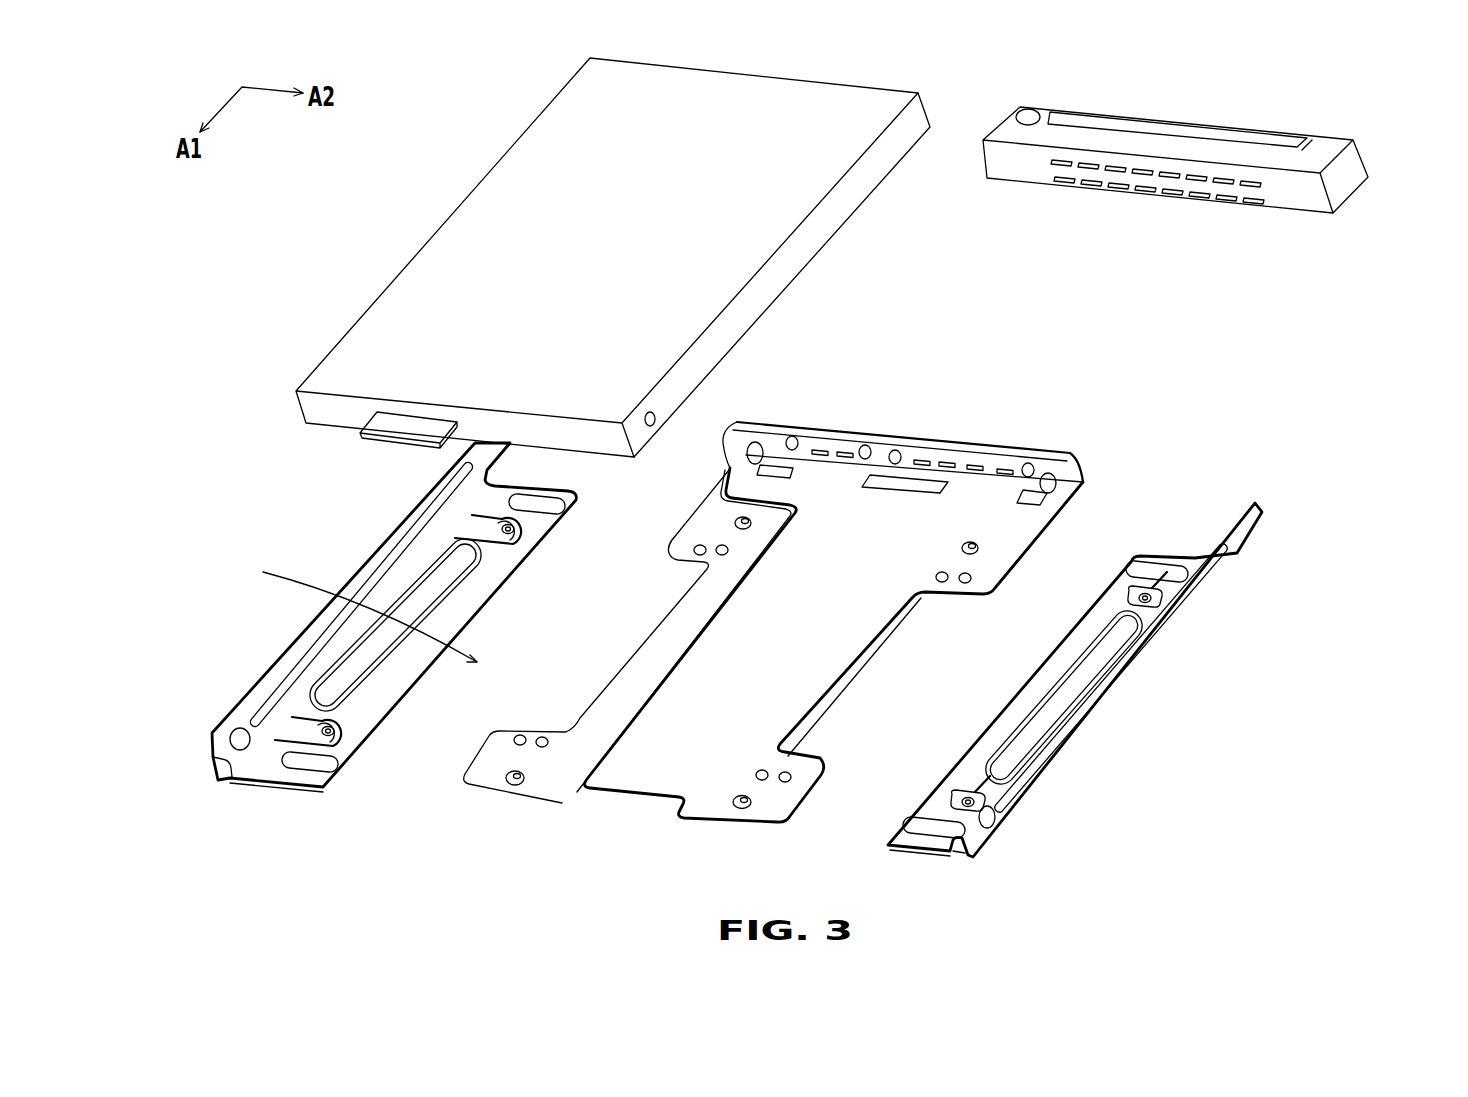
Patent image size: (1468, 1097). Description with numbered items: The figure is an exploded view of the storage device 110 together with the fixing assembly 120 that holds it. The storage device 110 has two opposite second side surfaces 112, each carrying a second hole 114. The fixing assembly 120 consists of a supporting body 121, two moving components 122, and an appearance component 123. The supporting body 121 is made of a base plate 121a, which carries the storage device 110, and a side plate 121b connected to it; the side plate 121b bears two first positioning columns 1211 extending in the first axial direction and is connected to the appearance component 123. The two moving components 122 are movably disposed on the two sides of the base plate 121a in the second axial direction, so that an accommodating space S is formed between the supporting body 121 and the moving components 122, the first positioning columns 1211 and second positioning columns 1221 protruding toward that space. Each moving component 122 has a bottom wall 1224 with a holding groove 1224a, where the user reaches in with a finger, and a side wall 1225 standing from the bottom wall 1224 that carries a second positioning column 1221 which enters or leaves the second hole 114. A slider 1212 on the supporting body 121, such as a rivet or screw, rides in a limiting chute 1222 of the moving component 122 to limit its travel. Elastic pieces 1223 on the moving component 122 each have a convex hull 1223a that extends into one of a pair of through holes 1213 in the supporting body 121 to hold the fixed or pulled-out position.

The storage device 110 is at (508, 203).
The second side surface 112 is at (791, 268).
The second hole 114 is at (658, 425).
The fixing assembly 120 is at (1402, 273).
The supporting body 121 is at (1402, 393).
The base plate 121a is at (653, 763).
The side plate 121b is at (924, 447).
The first positioning column 1211 is at (740, 460).
The slider 1212 is at (737, 520).
The through hole 1213 is at (719, 556).
The moving component 122 is at (308, 668).
The second positioning column 1221 is at (240, 745).
The limiting chute 1222 is at (513, 502).
The elastic piece 1223 is at (470, 530).
The convex hull 1223a is at (503, 528).
The bottom wall 1224 is at (450, 625).
The holding groove 1224a is at (380, 650).
The side wall 1225 is at (280, 678).
The appearance component 123 is at (1170, 148).
The accommodating space S is at (360, 606).